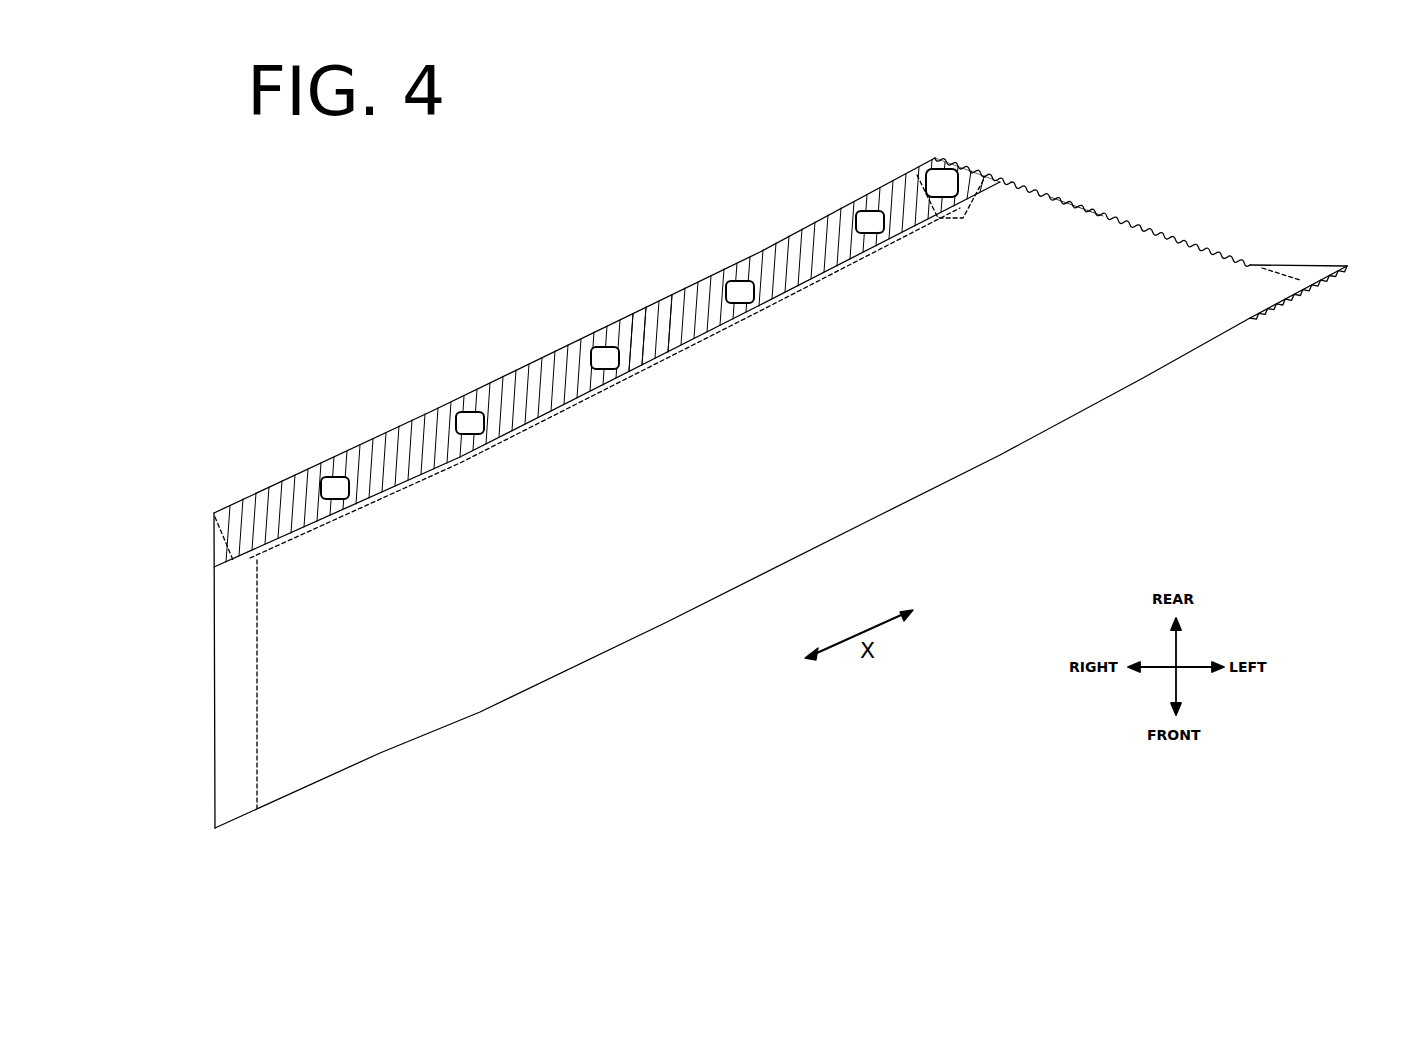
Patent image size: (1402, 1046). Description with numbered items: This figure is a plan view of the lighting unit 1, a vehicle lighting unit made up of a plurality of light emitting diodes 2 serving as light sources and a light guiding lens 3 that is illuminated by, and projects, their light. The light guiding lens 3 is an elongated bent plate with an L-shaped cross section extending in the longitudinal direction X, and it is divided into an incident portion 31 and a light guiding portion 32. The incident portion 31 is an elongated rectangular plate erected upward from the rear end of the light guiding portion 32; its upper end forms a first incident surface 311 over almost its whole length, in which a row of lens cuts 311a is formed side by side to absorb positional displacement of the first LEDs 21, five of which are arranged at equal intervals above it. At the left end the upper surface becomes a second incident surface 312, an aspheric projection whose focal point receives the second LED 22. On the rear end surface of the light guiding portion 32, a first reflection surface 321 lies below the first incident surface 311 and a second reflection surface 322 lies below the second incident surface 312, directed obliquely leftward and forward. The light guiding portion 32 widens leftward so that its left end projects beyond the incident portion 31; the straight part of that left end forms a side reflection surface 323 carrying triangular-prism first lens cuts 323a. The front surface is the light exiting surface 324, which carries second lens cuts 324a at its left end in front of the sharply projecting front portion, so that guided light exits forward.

The lighting unit 1 is at (494, 184).
The light emitting diodes 2 is at (616, 312).
The first LEDs 21 is at (335, 484).
The second LED 22 is at (940, 180).
The light guiding lens 3 is at (401, 764).
The incident portion 31 is at (233, 561).
The first incident surface 311 is at (388, 442).
The lens cuts 311a is at (678, 316).
The second incident surface 312 is at (936, 156).
The light guiding portion 32 is at (283, 683).
The first reflection surface 321 is at (282, 490).
The second reflection surface 322 is at (985, 177).
The side reflection surface 323 is at (1168, 236).
The first lens cuts 323a is at (1103, 215).
The light exiting surface 324 is at (667, 622).
The second lens cuts 324a is at (1345, 269).